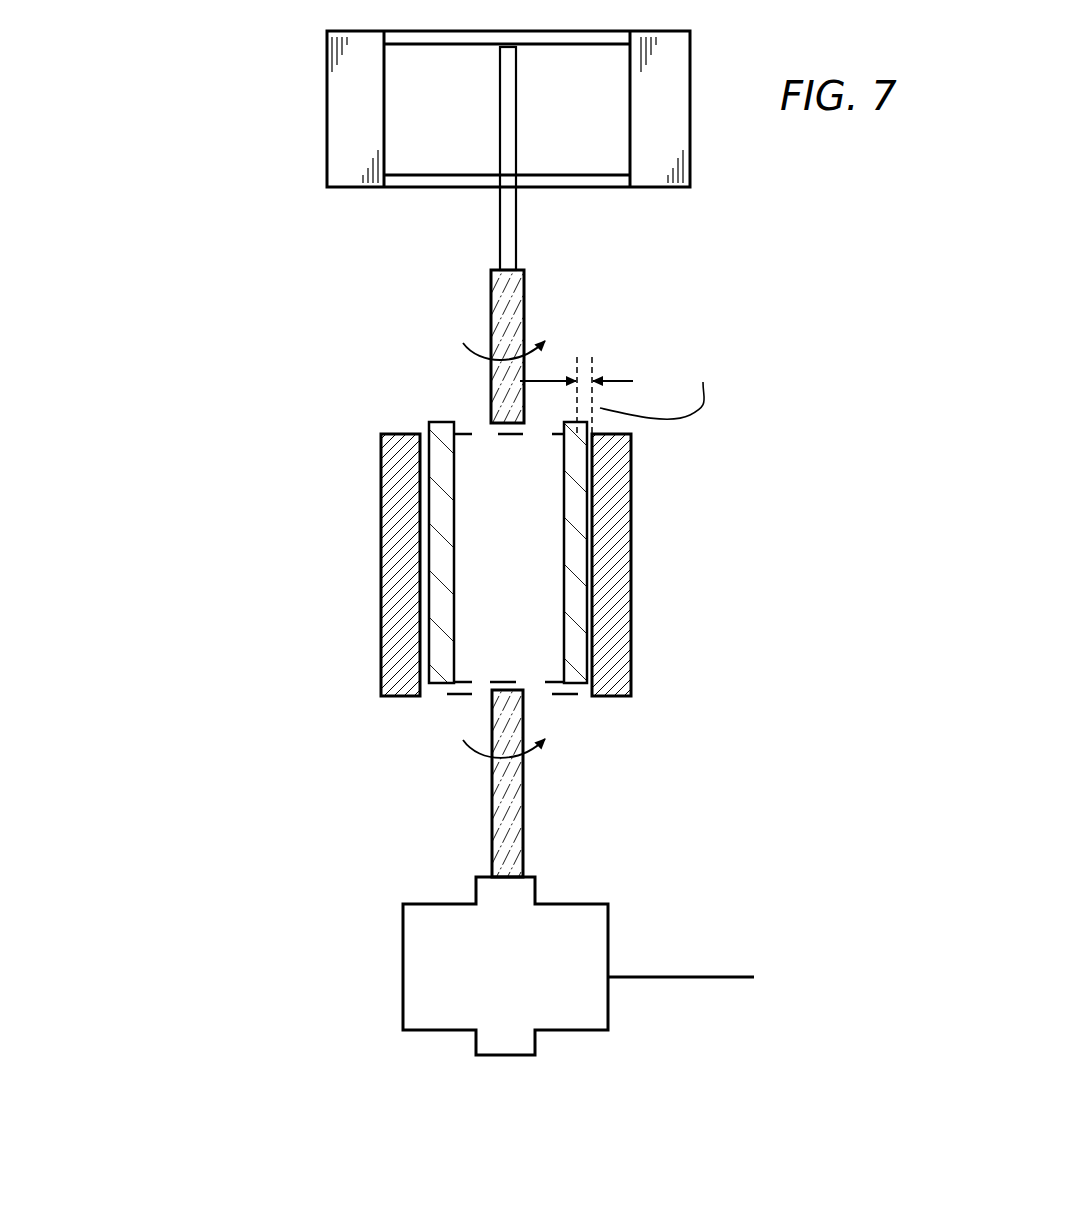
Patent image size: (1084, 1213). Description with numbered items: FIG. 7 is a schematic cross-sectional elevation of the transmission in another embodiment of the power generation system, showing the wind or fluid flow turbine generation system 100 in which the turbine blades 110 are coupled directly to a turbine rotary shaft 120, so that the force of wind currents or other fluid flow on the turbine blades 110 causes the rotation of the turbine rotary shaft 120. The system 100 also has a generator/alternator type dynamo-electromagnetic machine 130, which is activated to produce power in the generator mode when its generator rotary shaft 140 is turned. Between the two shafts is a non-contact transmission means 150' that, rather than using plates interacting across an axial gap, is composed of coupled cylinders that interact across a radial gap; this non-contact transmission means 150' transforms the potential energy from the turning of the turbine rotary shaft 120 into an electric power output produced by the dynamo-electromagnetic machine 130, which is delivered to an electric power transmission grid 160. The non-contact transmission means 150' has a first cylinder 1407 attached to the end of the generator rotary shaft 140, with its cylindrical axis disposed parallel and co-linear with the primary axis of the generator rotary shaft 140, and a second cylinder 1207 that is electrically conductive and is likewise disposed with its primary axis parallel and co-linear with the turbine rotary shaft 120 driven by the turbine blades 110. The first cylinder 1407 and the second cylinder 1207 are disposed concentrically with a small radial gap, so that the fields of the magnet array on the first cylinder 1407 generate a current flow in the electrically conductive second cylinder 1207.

The wind or fluid flow turbine generation system 100 is at (198, 335).
The turbine blades 110 is at (690, 150).
The turbine rotary shaft 120 is at (517, 318).
The dynamo-electromagnetic machine 130 is at (518, 978).
The generator rotary shaft 140 is at (528, 822).
The non-contact transmission means 150' is at (495, 519).
The electric power transmission grid 160 is at (650, 983).
The second cylinder 1207 is at (437, 430).
The first cylinder 1407 is at (625, 663).